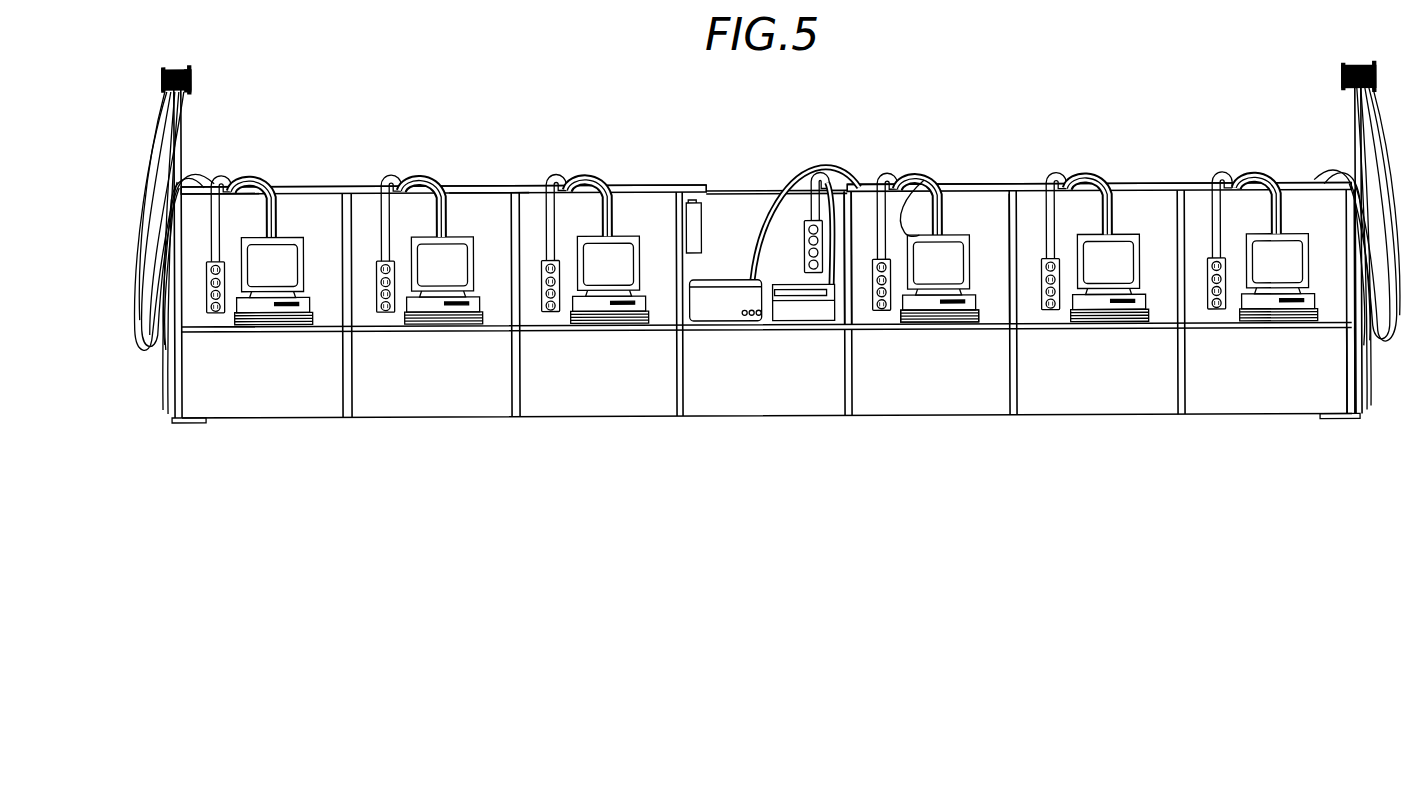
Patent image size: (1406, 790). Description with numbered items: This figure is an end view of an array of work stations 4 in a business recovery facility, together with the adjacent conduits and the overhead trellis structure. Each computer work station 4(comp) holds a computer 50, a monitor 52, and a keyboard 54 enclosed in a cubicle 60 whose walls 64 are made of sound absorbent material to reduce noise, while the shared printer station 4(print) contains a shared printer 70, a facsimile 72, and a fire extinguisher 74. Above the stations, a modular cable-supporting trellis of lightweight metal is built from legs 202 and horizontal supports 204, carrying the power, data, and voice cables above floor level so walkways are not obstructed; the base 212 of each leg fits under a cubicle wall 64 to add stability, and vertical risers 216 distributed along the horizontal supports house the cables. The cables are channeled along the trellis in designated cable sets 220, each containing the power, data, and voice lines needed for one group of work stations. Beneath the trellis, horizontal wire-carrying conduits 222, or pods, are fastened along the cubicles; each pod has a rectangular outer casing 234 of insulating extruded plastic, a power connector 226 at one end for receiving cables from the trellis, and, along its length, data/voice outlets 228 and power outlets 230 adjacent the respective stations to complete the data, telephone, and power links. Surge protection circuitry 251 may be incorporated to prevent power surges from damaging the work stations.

The work station 4 is at (1070, 108).
The computer 50 is at (981, 298).
The monitor 52 is at (926, 182).
The keyboard 54 is at (986, 325).
The cubicle 60 is at (861, 290).
The cubicle wall 64 is at (851, 380).
The shared printer 70 is at (743, 325).
The facsimile 72 is at (805, 316).
The fire extinguisher 74 is at (701, 228).
The leg 202 is at (183, 138).
The horizontal support 204 is at (192, 88).
The base 212 is at (1333, 426).
The vertical riser 216 is at (193, 75).
The cable set 220 is at (128, 198).
The horizontal wire-carrying conduit 222 is at (651, 172).
The power connector 226 is at (203, 195).
The data/voice outlet 228 is at (266, 178).
The power outlet 230 is at (234, 181).
The outer casing 234 is at (486, 187).
The surge protection circuitry 251 is at (1050, 318).